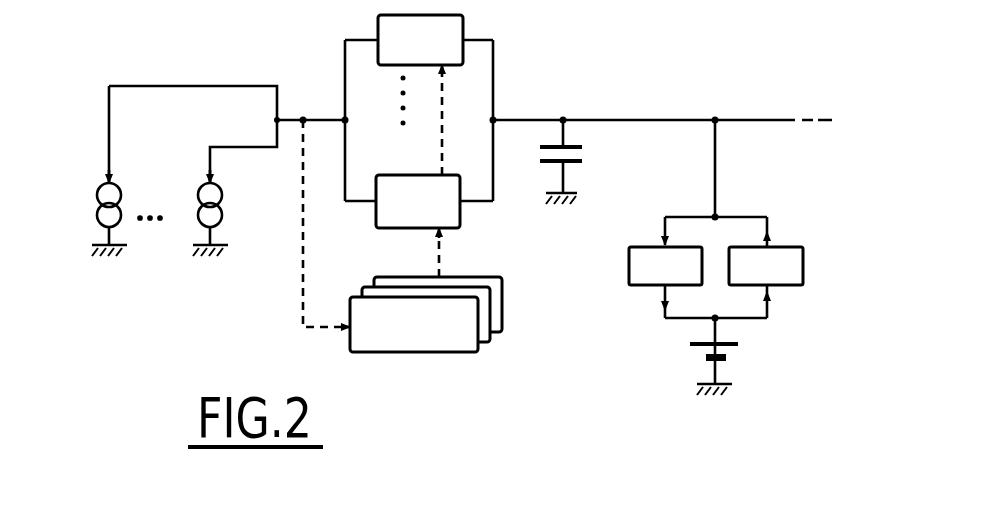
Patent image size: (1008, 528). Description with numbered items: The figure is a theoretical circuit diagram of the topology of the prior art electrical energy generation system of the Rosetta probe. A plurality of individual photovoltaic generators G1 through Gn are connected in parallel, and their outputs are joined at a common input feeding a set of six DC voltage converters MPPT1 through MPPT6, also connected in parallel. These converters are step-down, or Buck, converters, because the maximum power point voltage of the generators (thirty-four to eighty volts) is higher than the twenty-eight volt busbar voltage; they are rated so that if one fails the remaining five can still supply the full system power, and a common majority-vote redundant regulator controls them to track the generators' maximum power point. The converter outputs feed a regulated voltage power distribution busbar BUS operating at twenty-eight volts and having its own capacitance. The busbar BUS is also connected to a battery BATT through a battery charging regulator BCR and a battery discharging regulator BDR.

The photovoltaic generator G1 is at (92, 195).
The photovoltaic generator Gn is at (222, 198).
The DC voltage converter MPPT1 is at (420, 40).
The DC voltage converter MPPT6 is at (418, 201).
The regulated voltage power distribution busbar BUS is at (625, 115).
The battery charging regulator BCR is at (665, 267).
The battery discharging regulator BDR is at (766, 267).
The battery BATT is at (738, 357).